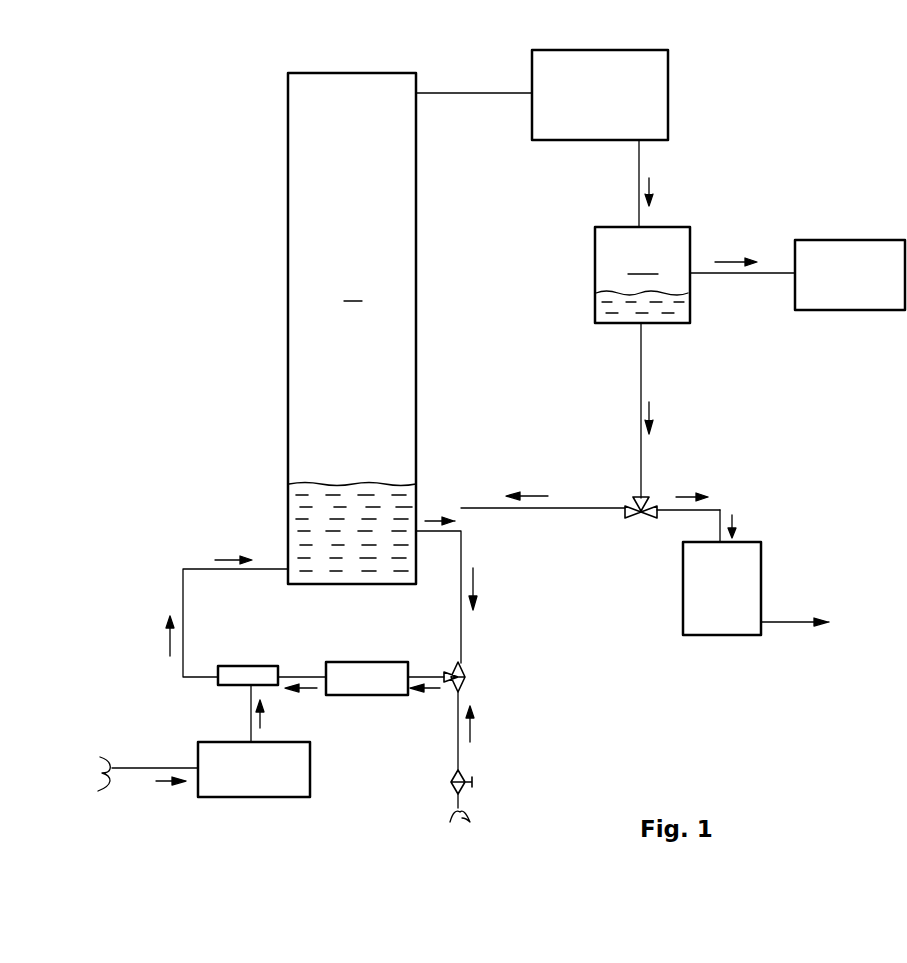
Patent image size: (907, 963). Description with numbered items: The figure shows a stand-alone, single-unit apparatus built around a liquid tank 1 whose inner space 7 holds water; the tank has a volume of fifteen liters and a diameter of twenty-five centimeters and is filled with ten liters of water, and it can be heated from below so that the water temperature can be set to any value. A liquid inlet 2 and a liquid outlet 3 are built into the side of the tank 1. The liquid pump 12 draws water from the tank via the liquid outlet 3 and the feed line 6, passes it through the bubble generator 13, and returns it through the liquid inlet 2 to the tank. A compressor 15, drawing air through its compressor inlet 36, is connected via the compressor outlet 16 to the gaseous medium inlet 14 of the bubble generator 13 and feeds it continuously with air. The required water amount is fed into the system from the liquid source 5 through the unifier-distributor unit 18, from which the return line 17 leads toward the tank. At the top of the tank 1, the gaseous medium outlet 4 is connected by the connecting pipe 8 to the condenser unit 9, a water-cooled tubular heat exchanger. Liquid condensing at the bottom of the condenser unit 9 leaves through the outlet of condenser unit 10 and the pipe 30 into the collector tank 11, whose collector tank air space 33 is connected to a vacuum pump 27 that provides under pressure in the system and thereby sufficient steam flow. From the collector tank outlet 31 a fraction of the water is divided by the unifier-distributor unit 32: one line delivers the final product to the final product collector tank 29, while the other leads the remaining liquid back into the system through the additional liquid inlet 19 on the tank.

The liquid tank 1 is at (358, 90).
The liquid inlet 2 is at (288, 568).
The liquid outlet 3 is at (421, 534).
The gaseous medium outlet 4 is at (417, 92).
The liquid source 5 is at (461, 810).
The feed line 6 is at (183, 591).
The inner space of the liquid tank 7 is at (353, 289).
The connecting pipe 8 is at (474, 98).
The condenser unit 9 is at (548, 62).
The outlet of condenser unit 10 is at (640, 147).
The collector tank 11 is at (672, 231).
The liquid pump 12 is at (358, 690).
The bubble generator 13 is at (242, 676).
The gaseous medium inlet 14 is at (246, 688).
The compressor 15 is at (252, 786).
The compressor outlet 16 is at (248, 740).
The return line 17 is at (461, 634).
The unifier-distributor unit 18 is at (460, 677).
The additional liquid inlet 19 is at (416, 508).
The vacuum pump 27 is at (868, 248).
The final product collector tank 29 is at (718, 620).
The pipe 30 is at (639, 199).
The collector tank outlet 31 is at (643, 326).
The unifier-distributor unit 32 is at (652, 494).
The collector tank air space 33 is at (642, 281).
The compressor inlet 36 is at (145, 792).